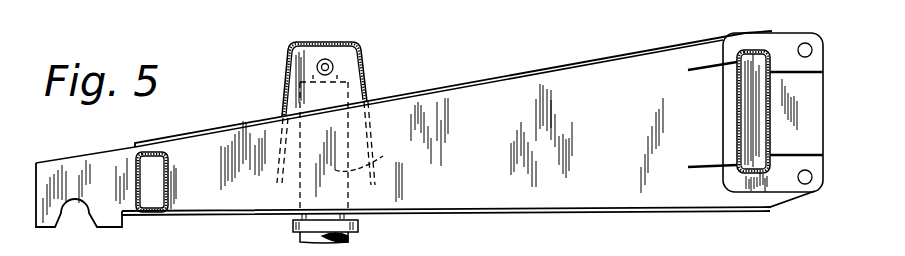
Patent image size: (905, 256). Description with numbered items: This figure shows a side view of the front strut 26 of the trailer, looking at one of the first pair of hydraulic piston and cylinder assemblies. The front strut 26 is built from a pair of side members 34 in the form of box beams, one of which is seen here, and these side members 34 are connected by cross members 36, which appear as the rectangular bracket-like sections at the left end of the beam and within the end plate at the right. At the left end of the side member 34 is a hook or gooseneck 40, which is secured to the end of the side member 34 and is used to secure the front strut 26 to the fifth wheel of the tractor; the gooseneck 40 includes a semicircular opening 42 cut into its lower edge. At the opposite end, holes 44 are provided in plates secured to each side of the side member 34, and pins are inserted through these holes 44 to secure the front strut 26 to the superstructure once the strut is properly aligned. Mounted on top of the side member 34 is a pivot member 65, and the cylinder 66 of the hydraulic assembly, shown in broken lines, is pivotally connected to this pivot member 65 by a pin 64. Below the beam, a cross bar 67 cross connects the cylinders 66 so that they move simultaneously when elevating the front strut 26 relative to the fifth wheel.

The front strut 26 is at (466, 80).
The side member 34 is at (566, 64).
The cross member 36 is at (170, 172).
The gooseneck 40 is at (50, 163).
The semicircular opening 42 is at (84, 204).
The holes 44 is at (813, 47).
The pin 64 is at (335, 66).
The pivot member 65 is at (283, 78).
The cylinder 66 is at (376, 162).
The cross bar 67 is at (293, 227).